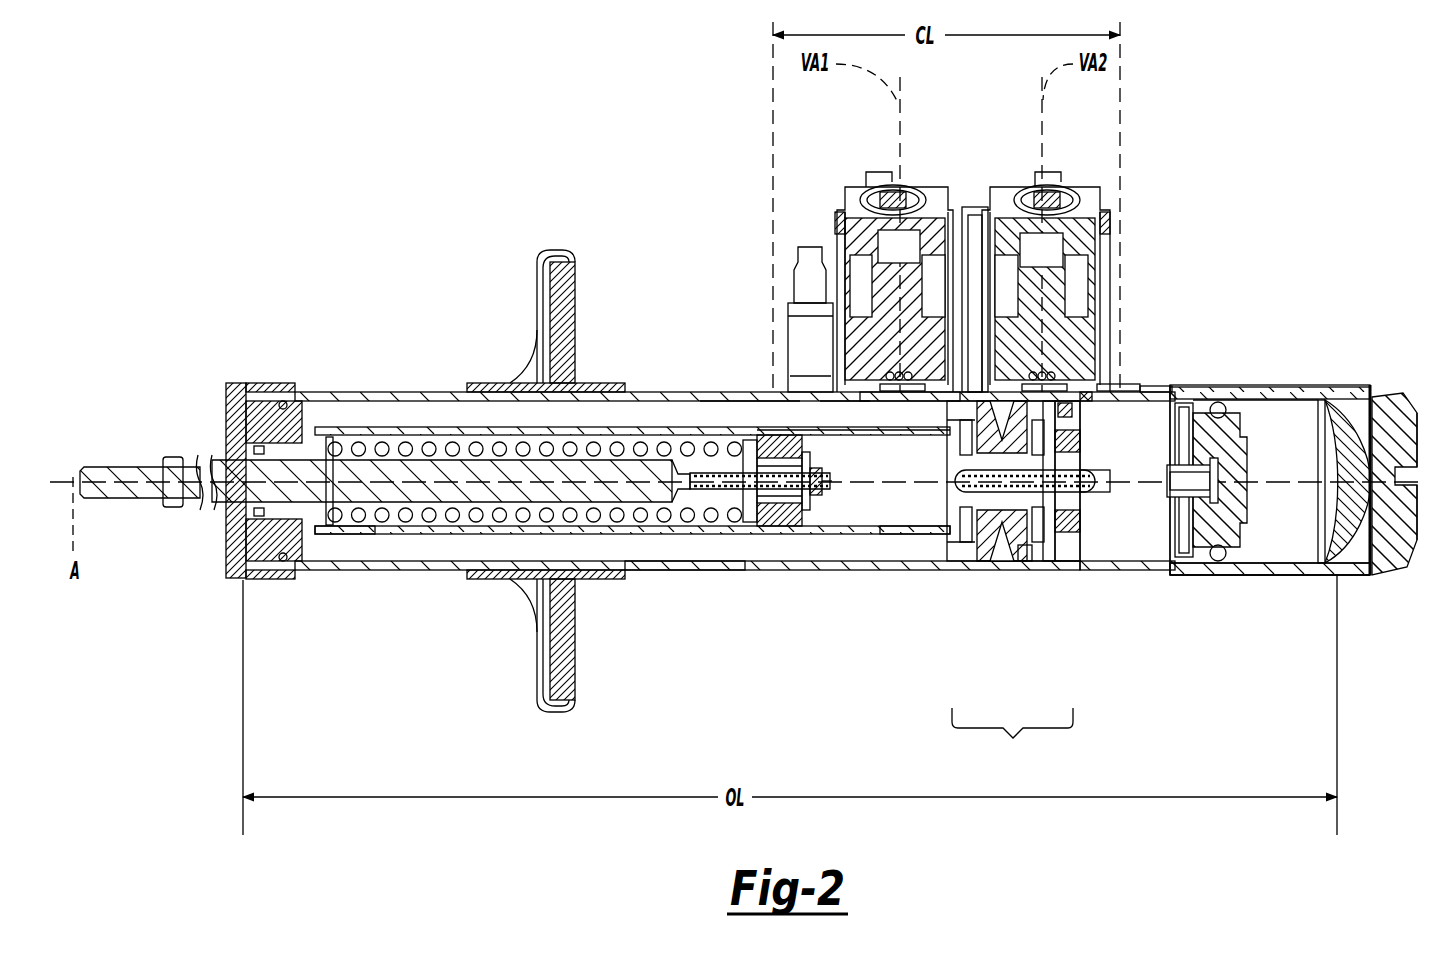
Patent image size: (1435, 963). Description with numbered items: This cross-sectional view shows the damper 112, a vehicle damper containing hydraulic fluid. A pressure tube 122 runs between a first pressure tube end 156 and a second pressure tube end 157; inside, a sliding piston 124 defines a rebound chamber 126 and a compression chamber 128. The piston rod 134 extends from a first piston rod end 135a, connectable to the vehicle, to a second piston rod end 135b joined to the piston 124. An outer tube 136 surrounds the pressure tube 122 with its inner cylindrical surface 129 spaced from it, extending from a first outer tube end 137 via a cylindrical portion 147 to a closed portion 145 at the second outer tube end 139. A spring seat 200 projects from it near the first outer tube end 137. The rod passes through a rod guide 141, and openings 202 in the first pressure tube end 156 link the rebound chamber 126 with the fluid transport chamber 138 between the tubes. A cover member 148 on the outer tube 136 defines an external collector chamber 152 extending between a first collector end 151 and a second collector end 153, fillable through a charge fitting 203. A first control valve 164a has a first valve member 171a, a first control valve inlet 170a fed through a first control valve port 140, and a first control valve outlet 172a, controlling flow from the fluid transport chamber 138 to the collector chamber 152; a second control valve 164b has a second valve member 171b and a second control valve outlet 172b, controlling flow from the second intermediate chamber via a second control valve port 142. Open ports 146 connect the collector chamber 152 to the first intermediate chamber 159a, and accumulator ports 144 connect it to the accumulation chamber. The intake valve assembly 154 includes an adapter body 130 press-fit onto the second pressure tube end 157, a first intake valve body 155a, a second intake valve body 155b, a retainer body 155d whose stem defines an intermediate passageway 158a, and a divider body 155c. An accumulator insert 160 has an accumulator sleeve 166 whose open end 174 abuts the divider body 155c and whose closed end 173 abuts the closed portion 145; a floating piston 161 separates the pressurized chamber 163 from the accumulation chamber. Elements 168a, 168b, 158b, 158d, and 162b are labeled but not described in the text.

The damper 112 is at (400, 182).
The first piston rod end 135a is at (82, 456).
The second piston rod end 135b is at (1388, 395).
The piston rod 134 is at (236, 392).
The first outer tube end 137 is at (308, 572).
The rod guide 141 is at (270, 400).
The outer tube 136 is at (449, 572).
The fluid transport chamber 138 is at (322, 428).
The openings 202 is at (340, 450).
The rebound chamber 126 is at (417, 522).
The first pressure tube end 156 is at (357, 534).
The spring seat 200 is at (563, 280).
The inner cylindrical surface 129 is at (708, 562).
The pressure tube 122 is at (752, 534).
The piston 124 is at (788, 528).
The compression chamber 128 is at (896, 497).
The collector chamber 152 is at (832, 401).
The first control valve port 140 is at (905, 400).
The first collector end 151 is at (770, 392).
The second pressure tube end 157 is at (897, 536).
The charge fitting 203 is at (788, 268).
The first control valve 164a is at (850, 182).
The first valve member 171a is at (913, 250).
The first valve bracket 168a is at (835, 211).
The first control valve inlet 170a is at (886, 384).
The first control valve outlet 172a is at (884, 376).
The second control valve 164b is at (1092, 182).
The second valve member 171b is at (1030, 258).
The second valve bracket 168b is at (1110, 212).
The second control valve outlet 172b is at (1050, 376).
The open ports 146 is at (973, 207).
The adapter body 130 is at (957, 562).
The first intermediate chamber 159a is at (1005, 562).
The first intake valve body 155a is at (1078, 490).
The second intake valve body 155b is at (1021, 562).
The divider body 155c is at (1080, 478).
The retainer body 155d is at (1062, 530).
The intermediate passageway 158a is at (958, 530).
The upper left seal 158b is at (953, 438).
The upper right seal 158d is at (1050, 440).
The body portion 162b is at (1120, 570).
The open end 174 is at (1090, 562).
The second control valve port 142 is at (1072, 410).
The accumulator ports 144 is at (1088, 392).
The cover member 148 is at (1128, 385).
The second collector end 153 is at (1160, 392).
The accumulator sleeve 166 is at (1292, 387).
The floating piston 161 is at (1222, 520).
The closed end 173 is at (1336, 478).
The pressurized chamber 163 is at (1298, 545).
The second outer tube end 139 is at (1284, 577).
The cylindrical portion 147 is at (1238, 587).
The accumulator insert 160 is at (1178, 584).
The closed portion 145 is at (1390, 530).
The intake valve assembly 154 is at (1012, 737).